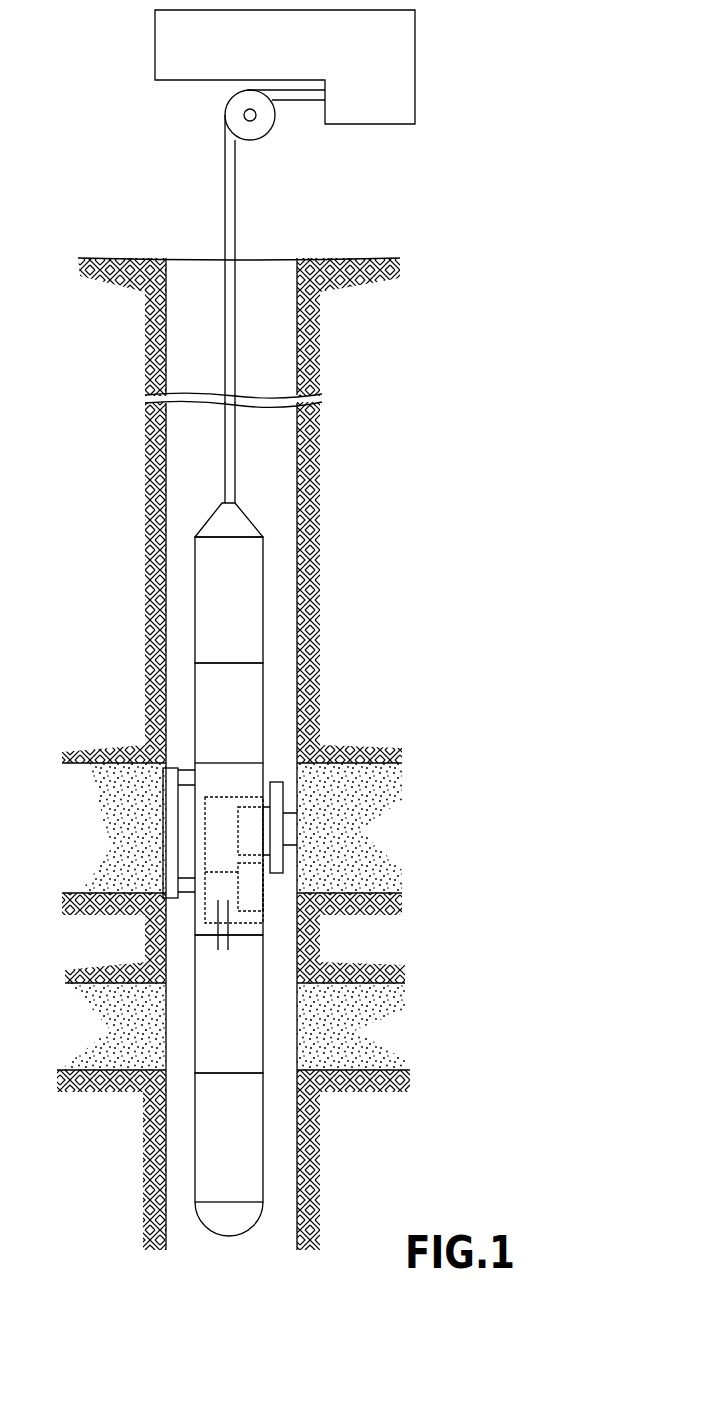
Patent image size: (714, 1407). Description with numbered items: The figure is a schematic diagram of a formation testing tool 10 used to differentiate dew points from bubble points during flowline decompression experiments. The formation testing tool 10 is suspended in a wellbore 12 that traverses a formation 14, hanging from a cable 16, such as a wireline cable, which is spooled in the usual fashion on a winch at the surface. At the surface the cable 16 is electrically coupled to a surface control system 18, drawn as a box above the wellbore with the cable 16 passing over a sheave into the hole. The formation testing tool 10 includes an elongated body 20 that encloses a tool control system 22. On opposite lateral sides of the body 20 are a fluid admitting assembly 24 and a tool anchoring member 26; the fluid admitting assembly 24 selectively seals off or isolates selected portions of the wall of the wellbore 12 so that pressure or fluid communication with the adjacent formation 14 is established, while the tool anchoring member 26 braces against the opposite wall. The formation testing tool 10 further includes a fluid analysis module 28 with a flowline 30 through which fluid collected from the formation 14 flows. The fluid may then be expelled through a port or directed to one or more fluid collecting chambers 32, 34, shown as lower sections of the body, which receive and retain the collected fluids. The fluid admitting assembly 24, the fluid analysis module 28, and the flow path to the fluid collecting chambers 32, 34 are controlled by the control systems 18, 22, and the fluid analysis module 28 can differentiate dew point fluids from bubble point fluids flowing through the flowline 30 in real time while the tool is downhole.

The formation testing tool 10 is at (250, 869).
The wellbore 12 is at (298, 307).
The formation 14 is at (391, 851).
The cable 16 is at (223, 188).
The surface control system 18 is at (395, 124).
The elongated body 20 is at (233, 570).
The tool control system 22 is at (243, 734).
The fluid admitting assembly 24 is at (283, 786).
The tool anchoring member 26 is at (172, 810).
The fluid analysis module 28 is at (248, 907).
The flowline 30 is at (228, 920).
The fluid collecting chamber 32 is at (243, 1040).
The fluid collecting chamber 34 is at (243, 1151).